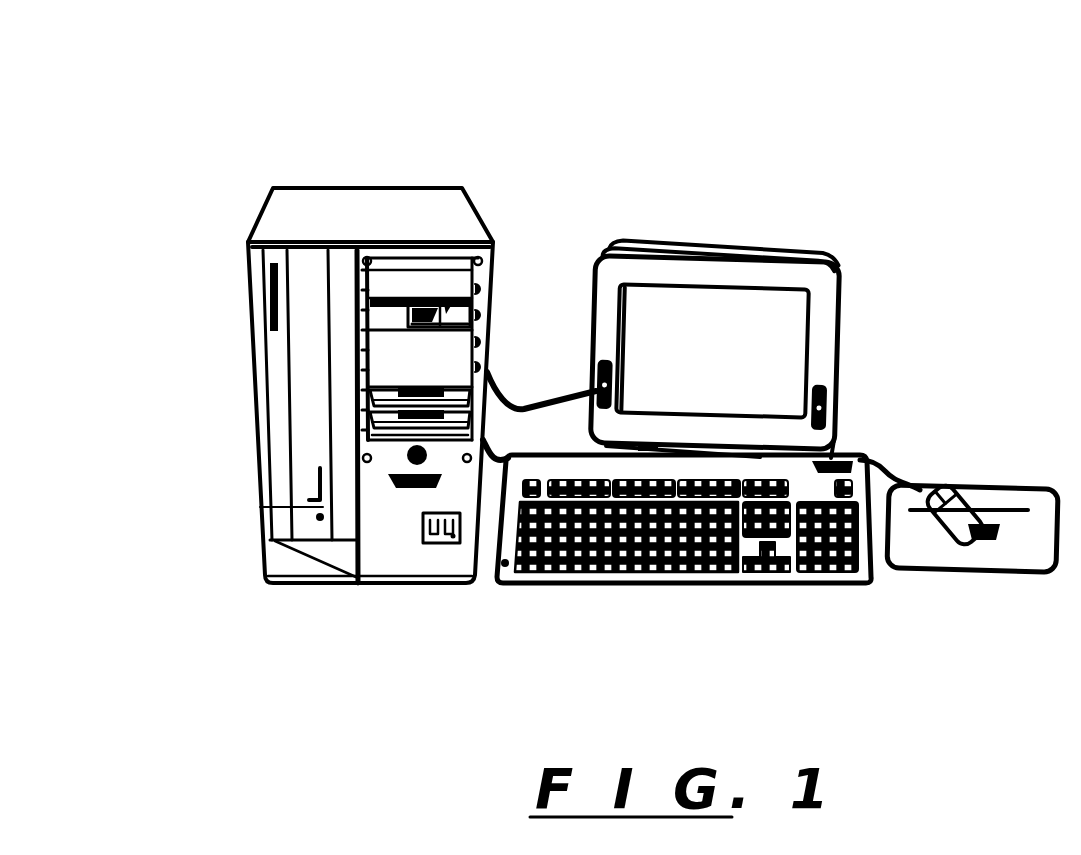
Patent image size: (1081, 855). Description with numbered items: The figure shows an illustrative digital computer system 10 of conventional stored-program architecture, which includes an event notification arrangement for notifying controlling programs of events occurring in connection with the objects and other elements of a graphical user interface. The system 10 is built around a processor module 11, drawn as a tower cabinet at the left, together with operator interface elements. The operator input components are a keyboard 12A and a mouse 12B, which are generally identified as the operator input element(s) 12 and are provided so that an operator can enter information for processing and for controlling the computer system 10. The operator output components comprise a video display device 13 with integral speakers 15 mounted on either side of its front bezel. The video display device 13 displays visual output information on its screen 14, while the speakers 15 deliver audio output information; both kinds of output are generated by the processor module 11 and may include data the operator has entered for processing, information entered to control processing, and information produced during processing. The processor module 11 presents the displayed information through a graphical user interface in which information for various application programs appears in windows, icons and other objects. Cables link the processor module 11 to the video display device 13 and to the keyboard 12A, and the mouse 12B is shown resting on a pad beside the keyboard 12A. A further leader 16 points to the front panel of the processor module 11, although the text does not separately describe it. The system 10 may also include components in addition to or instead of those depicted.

The computer system 10 is at (176, 97).
The computer tower housing 11 is at (381, 186).
The input devices 12 is at (866, 645).
The keyboard 12A is at (724, 590).
The mouse 12B is at (1038, 580).
The monitor 13 is at (846, 355).
The display screen 14 is at (632, 324).
The speakers 15 is at (598, 372).
The front panel 16 is at (252, 405).